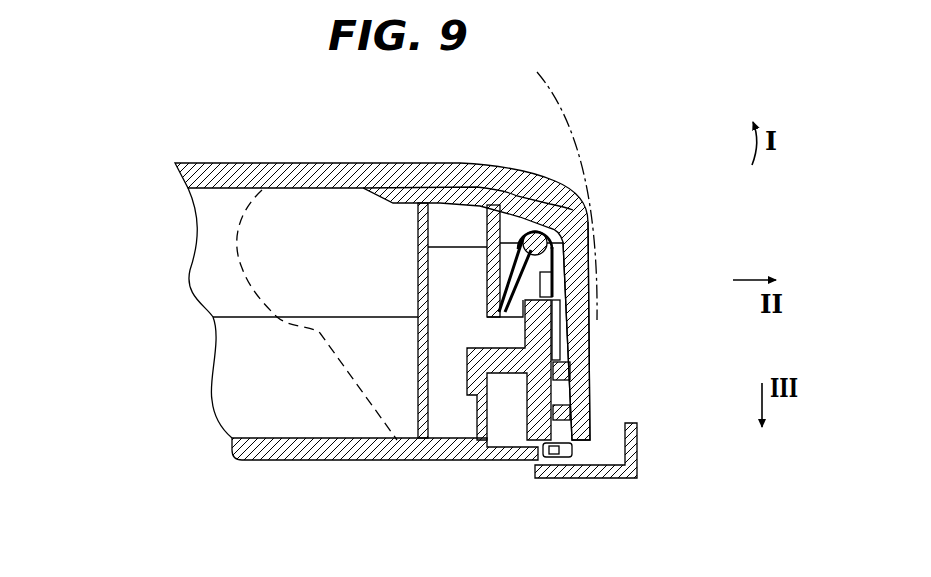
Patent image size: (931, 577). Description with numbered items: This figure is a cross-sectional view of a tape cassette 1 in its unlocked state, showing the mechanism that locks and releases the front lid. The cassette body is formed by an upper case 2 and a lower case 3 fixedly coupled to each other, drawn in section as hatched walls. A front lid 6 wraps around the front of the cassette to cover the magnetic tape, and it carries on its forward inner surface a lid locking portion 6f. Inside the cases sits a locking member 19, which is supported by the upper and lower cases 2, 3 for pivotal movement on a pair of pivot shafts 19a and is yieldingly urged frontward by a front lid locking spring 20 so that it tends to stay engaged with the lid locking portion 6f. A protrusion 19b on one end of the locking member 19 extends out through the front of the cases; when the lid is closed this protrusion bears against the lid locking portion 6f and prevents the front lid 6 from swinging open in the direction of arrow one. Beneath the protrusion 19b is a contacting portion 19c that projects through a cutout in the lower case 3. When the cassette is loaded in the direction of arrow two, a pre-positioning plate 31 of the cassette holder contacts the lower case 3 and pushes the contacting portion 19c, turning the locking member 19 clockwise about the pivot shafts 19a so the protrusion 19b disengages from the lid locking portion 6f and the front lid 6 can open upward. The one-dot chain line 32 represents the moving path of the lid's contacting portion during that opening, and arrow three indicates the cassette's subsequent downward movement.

The tape cassette 1 is at (118, 534).
The upper case 2 is at (203, 164).
The lower case 3 is at (265, 462).
The front lid 6 is at (587, 224).
The lid locking portion 6f is at (567, 398).
The locking member 19 is at (525, 375).
The pivot shafts 19a is at (553, 245).
The protrusion 19b is at (575, 368).
The contacting portion 19c is at (575, 430).
The front lid locking spring 20 is at (495, 245).
The pre-positioning plate 31 is at (610, 477).
The one-dot chain line 32 is at (541, 84).